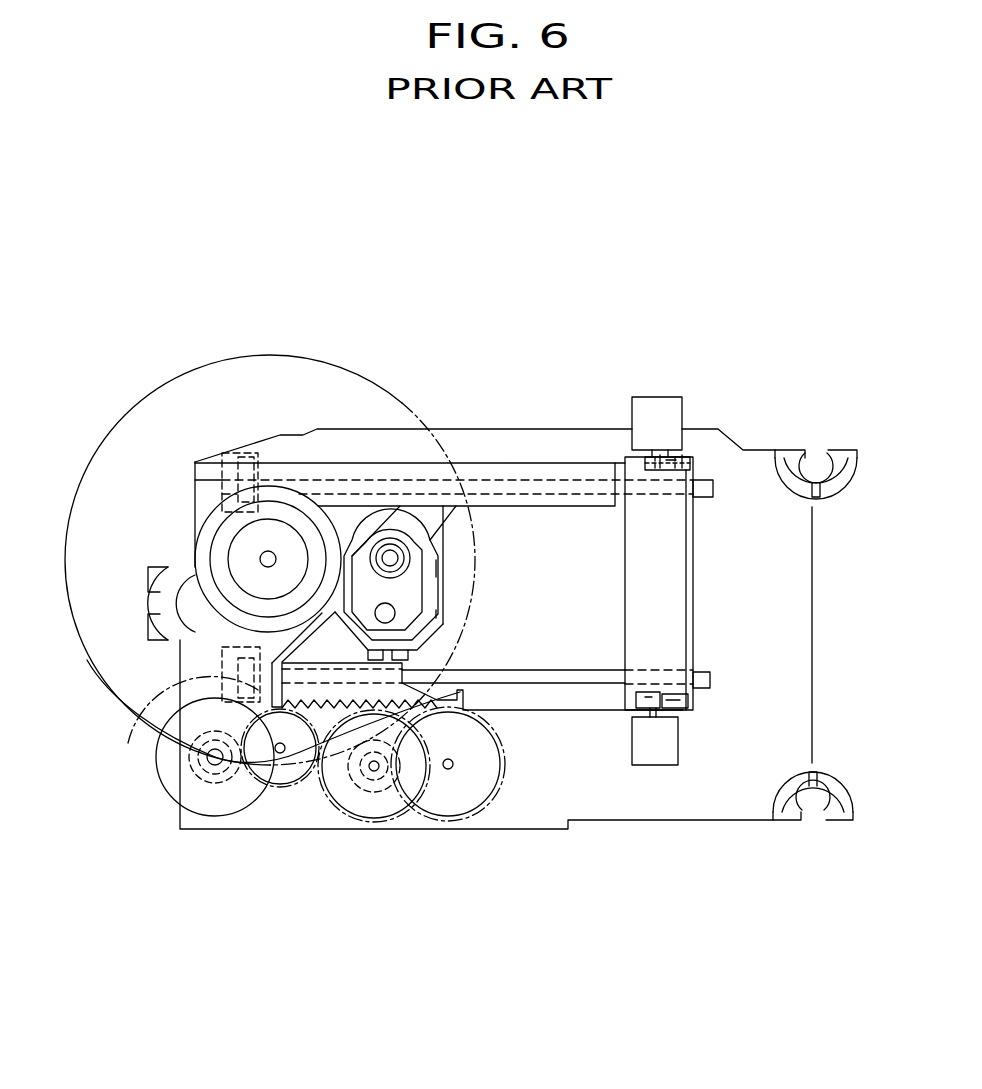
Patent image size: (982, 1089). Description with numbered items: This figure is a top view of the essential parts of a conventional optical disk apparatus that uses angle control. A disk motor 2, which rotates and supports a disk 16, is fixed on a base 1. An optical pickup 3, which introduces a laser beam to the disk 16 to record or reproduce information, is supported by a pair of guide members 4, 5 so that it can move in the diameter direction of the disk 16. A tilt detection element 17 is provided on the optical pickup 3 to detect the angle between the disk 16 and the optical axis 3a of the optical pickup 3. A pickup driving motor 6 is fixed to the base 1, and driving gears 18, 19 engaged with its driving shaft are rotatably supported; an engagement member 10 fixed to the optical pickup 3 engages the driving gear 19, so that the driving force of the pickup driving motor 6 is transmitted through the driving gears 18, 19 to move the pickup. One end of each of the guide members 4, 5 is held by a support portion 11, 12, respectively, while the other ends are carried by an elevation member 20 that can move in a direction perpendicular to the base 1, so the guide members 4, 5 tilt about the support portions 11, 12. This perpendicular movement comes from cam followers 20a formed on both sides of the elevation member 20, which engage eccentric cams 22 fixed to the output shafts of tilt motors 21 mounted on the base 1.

The base 1 is at (797, 688).
The disk motor 2 is at (202, 545).
The optical pickup 3 is at (433, 537).
The optical axis 3a is at (392, 558).
The guide member 4 is at (590, 677).
The guide member 5 is at (538, 490).
The pickup driving motor 6 is at (221, 800).
The engagement member 10 is at (460, 692).
The support portion 11 is at (181, 674).
The support portion 12 is at (233, 452).
The disk 16 is at (303, 355).
The tilt detection element 17 is at (385, 613).
The driving gear 18 is at (373, 780).
The driving gear 19 is at (448, 812).
The elevation member 20 is at (670, 562).
The cam follower 20a is at (688, 452).
The tilt motor 21 is at (648, 410).
The eccentric cam 22 is at (688, 425).